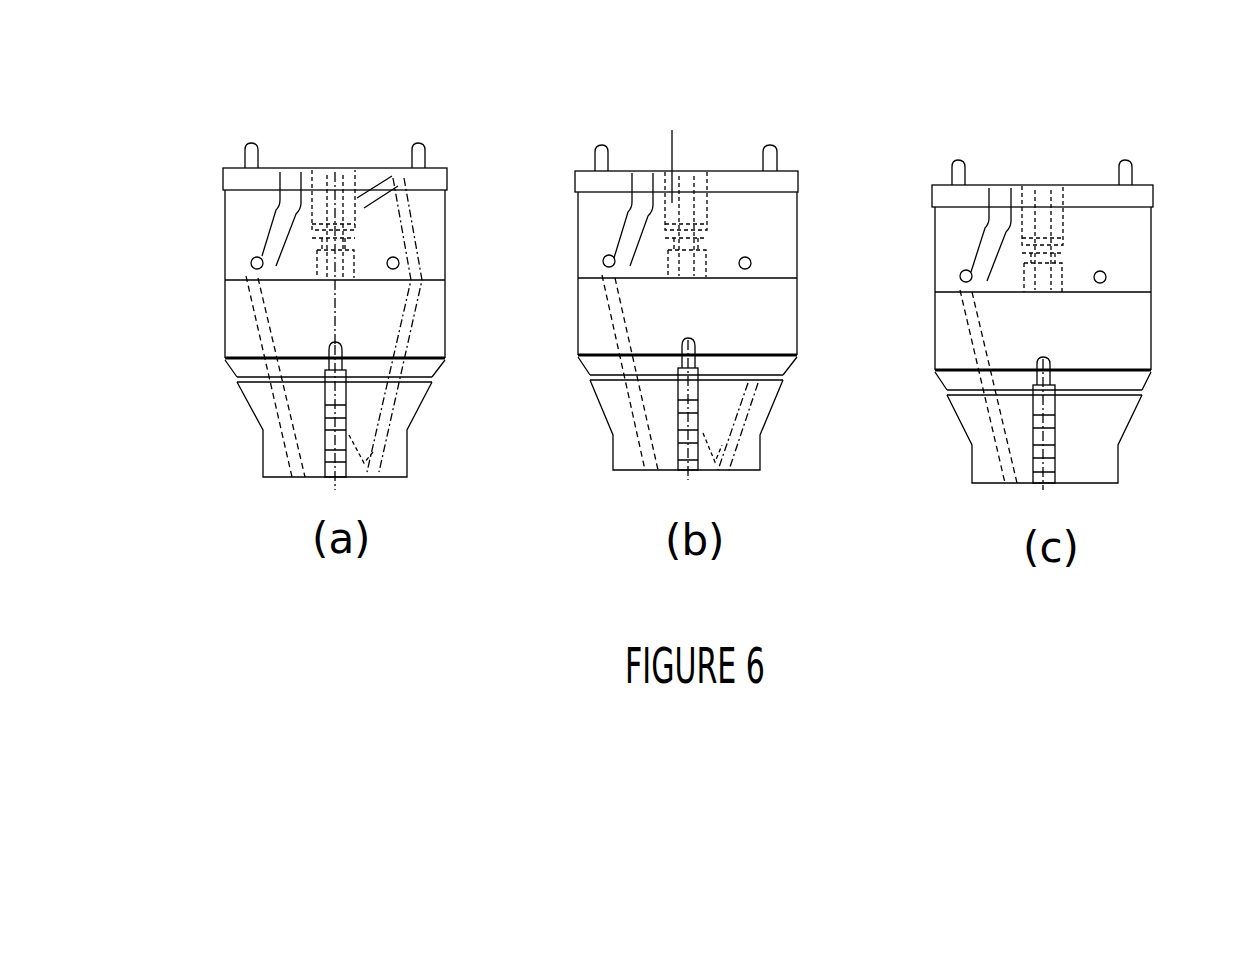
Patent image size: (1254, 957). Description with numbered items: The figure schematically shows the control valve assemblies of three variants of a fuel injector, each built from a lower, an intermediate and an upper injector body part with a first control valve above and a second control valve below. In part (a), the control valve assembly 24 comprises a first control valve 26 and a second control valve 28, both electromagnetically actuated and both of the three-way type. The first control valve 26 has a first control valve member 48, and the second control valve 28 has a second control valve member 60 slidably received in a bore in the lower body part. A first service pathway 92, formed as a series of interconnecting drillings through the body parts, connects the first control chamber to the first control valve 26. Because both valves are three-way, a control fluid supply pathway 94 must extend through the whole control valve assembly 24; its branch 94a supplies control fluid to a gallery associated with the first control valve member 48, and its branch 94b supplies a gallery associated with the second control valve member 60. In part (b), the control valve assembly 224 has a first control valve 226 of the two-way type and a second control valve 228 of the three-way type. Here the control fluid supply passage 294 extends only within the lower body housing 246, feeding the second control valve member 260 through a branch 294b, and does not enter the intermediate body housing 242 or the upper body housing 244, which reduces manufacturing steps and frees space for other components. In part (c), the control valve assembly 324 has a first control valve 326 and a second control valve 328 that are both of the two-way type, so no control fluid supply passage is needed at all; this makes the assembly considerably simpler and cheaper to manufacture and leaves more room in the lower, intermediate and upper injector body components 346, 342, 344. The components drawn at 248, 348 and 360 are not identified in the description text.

In FIG. 6a, the control valve assembly 24 is at (200, 152).
In FIG. 6a, the first control valve 26 is at (208, 230).
In FIG. 6a, the second control valve 28 is at (243, 441).
In FIG. 6a, the first control valve member 48 is at (322, 207).
In FIG. 6a, the second control valve member 60 is at (332, 458).
In FIG. 6a, the first service pathway 92 is at (258, 325).
In FIG. 6a, the control fluid supply pathway 94 is at (418, 318).
In FIG. 6a, the branch of the control fluid supply pathway 94a is at (371, 192).
In FIG. 6a, the branch of the control fluid supply pathway 94b is at (356, 455).
The control valve assembly 224 is at (543, 148).
The first control valve 226 is at (568, 222).
The second control valve 228 is at (598, 442).
The intermediate body housing 242 is at (788, 312).
The upper body housing 244 is at (781, 236).
The lower body housing 246 is at (767, 396).
The valve (second embodiment) 248 is at (686, 203).
The second control valve member 260 is at (685, 458).
The control fluid supply passage 294 is at (735, 440).
The branch of the control fluid supply passage 294b is at (708, 450).
The control valve assembly 324 is at (932, 145).
The first control valve 326 is at (928, 241).
The second control valve 328 is at (958, 446).
The intermediate injector body component 342 is at (1140, 330).
The upper injector body component 344 is at (1142, 250).
The lower injector body component 346 is at (1115, 410).
The valve (third embodiment) 348 is at (1042, 239).
The actuating pin (third embodiment) 360 is at (1044, 423).